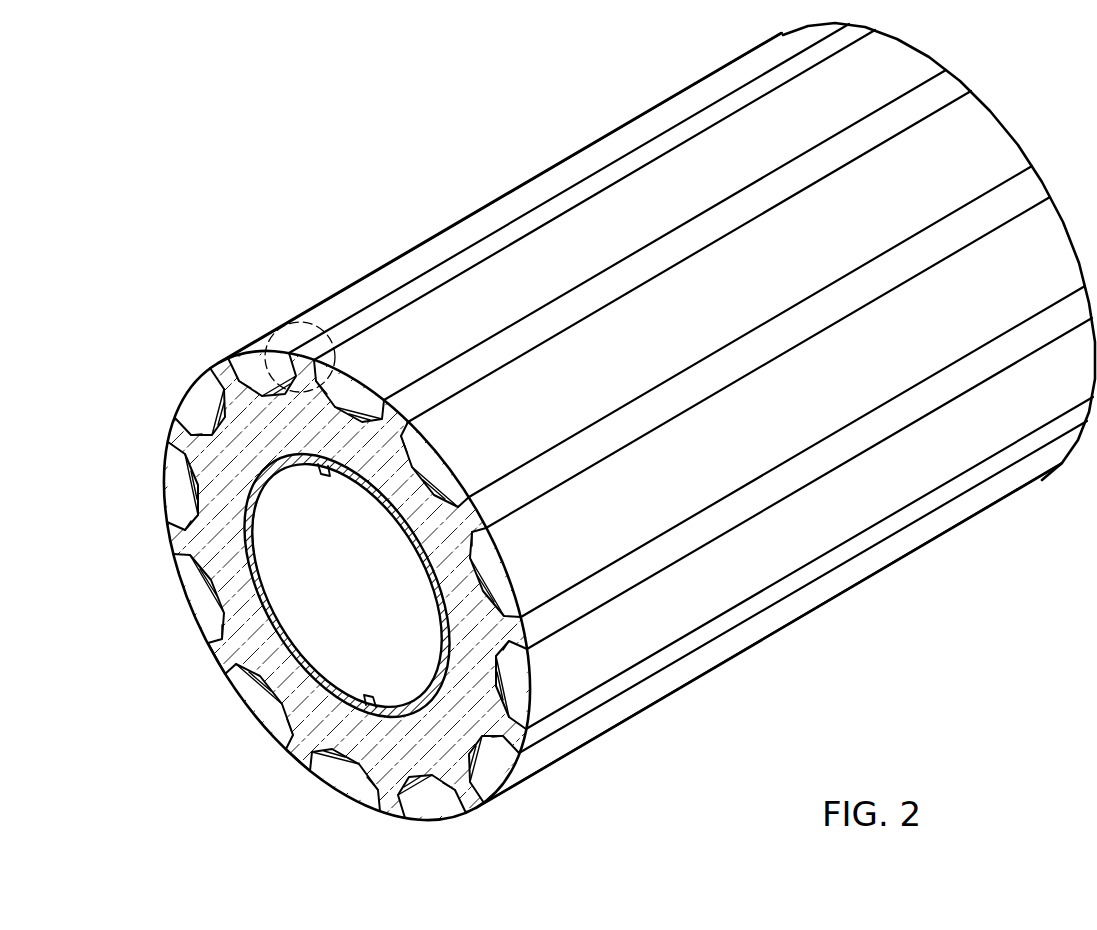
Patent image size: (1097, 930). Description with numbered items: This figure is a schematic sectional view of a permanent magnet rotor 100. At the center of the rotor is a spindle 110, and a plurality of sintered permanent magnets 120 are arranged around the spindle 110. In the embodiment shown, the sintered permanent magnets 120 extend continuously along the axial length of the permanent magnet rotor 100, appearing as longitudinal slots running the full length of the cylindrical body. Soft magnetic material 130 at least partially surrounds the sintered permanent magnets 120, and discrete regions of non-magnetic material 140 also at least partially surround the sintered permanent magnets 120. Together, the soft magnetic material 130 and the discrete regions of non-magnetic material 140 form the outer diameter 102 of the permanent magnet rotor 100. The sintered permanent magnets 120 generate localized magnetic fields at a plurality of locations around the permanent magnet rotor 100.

The permanent magnet rotor 100 is at (466, 448).
The outer diameter 102 is at (1006, 142).
The spindle 110 is at (259, 526).
The sintered permanent magnets 120 is at (283, 728).
The soft magnetic material 130 is at (220, 656).
The discrete regions of non-magnetic material 140 is at (431, 796).